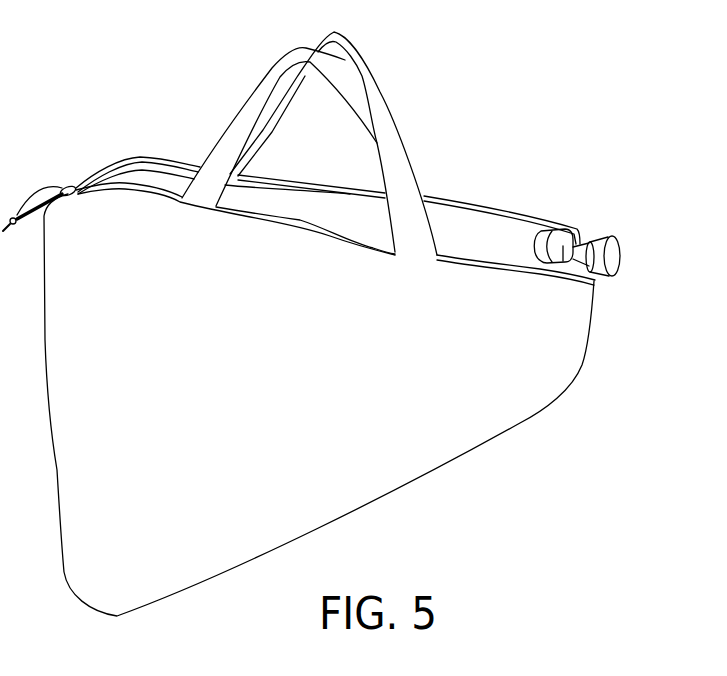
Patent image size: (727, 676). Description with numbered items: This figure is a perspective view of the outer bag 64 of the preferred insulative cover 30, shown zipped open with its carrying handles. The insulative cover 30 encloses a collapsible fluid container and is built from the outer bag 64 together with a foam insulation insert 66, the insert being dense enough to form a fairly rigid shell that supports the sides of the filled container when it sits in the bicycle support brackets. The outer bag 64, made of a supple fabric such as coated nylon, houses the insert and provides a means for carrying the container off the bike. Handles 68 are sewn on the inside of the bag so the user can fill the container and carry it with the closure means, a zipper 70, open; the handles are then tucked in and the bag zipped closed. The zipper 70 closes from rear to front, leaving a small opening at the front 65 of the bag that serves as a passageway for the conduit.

The insulative cover 30 is at (268, 368).
The outer bag 64 is at (508, 392).
The front of the bag 65 is at (597, 283).
The foam insulation insert 66 is at (507, 230).
The handles 68 is at (260, 100).
The zipper 70 is at (73, 189).